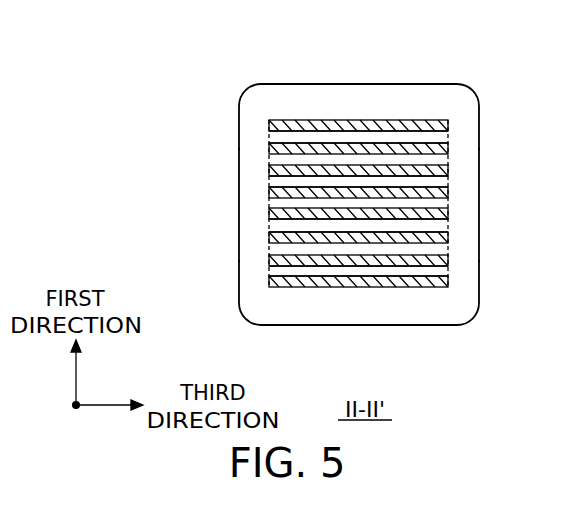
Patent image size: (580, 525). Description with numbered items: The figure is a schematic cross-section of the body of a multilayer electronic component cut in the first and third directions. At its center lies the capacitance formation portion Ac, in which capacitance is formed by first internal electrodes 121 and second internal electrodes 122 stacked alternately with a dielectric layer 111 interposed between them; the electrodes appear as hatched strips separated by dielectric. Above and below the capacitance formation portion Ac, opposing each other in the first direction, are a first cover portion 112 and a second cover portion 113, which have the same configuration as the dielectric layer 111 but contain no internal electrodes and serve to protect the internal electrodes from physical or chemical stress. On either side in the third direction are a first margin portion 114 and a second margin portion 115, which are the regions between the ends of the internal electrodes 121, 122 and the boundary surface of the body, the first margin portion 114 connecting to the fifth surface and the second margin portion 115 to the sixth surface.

The first cover portion 112 is at (359, 93).
The second cover portion 113 is at (360, 317).
The first margin portion 114 is at (257, 240).
The second margin portion 115 is at (472, 230).
The dielectric layer 111 is at (448, 137).
The first internal electrode 121 is at (448, 126).
The second internal electrode 122 is at (448, 150).
The capacitance formation portion Ac is at (270, 210).